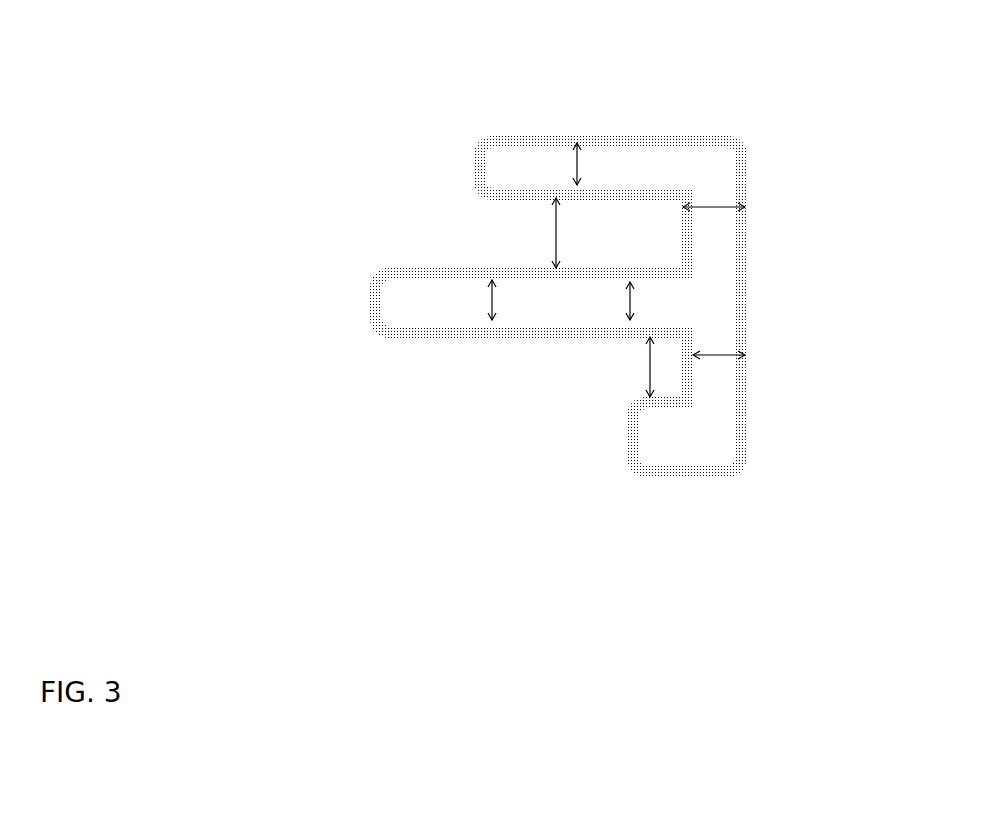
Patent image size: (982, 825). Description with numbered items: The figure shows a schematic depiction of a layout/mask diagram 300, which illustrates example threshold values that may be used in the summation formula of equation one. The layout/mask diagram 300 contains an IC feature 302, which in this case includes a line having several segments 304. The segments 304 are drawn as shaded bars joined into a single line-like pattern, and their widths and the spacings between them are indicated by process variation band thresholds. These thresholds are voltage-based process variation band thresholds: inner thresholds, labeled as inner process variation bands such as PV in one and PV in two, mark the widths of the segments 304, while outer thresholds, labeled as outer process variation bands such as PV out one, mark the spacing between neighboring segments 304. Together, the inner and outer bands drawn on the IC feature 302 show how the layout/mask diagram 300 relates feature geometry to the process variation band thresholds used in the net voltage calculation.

The layout/mask diagram 300 is at (276, 80).
The IC feature 302 is at (762, 105).
The segments 304 is at (550, 157).